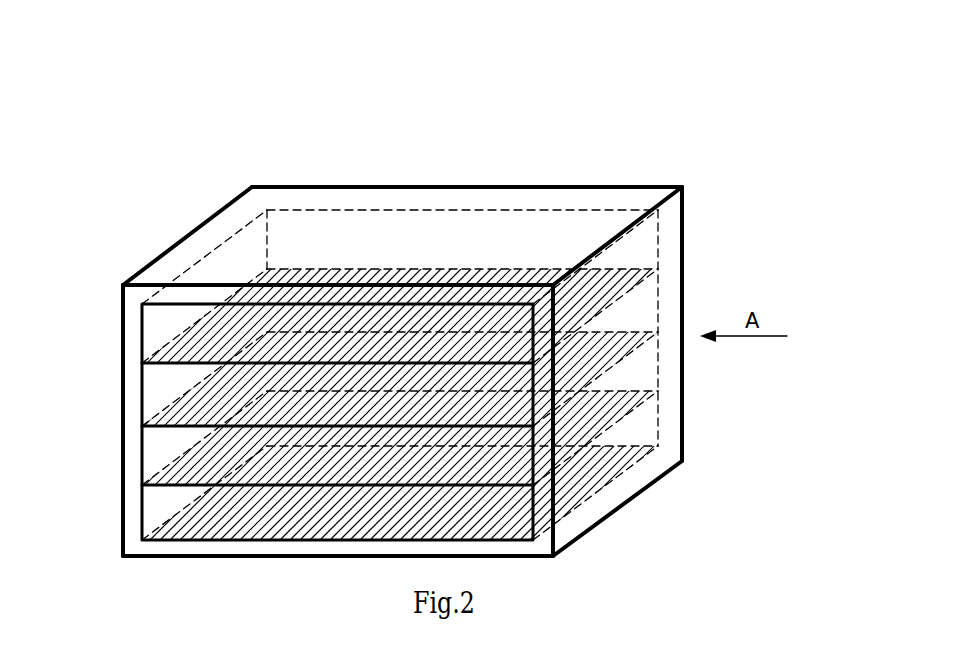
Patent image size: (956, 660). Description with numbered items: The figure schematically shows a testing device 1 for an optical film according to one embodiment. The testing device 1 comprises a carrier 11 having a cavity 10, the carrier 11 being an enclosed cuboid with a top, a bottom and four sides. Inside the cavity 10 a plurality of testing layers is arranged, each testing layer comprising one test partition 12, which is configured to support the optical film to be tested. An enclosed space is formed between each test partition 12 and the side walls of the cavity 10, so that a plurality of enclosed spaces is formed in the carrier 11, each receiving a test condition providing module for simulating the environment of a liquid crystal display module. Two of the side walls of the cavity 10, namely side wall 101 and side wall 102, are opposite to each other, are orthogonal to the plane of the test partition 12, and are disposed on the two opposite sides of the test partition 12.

The testing device 1 is at (242, 175).
The cavity 10 is at (428, 238).
The carrier 11 is at (331, 186).
The side wall 101 is at (632, 260).
The side wall 102 is at (238, 252).
The test partition 12 is at (172, 401).